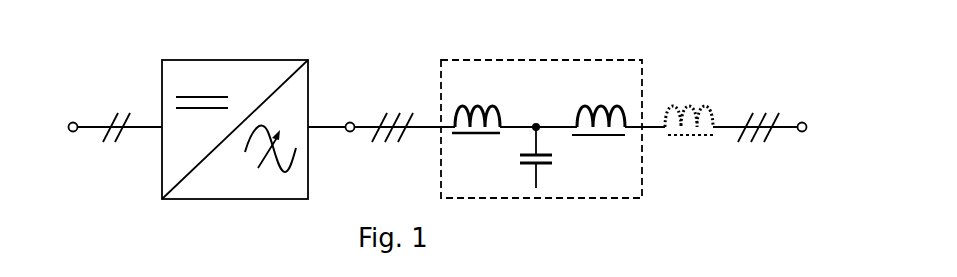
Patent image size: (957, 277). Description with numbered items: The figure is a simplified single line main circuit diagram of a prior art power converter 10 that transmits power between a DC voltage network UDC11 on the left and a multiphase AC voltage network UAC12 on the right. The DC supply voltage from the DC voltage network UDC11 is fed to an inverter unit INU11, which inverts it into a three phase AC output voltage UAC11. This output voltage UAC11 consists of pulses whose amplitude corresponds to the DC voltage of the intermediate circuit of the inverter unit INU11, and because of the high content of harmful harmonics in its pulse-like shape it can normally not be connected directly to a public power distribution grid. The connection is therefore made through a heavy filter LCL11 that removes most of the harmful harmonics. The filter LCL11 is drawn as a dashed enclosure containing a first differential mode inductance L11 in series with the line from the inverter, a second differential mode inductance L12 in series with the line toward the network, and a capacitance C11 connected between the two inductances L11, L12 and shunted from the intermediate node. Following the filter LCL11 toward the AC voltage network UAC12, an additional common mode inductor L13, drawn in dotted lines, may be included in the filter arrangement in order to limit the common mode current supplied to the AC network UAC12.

The power converter 10 is at (804, 33).
The inverter unit INU11 is at (248, 60).
The filter LCL11 is at (555, 60).
The first differential mode inductance L11 is at (476, 107).
The second differential mode inductance L12 is at (598, 108).
The additional common mode inductor L13 is at (689, 108).
The capacitance C11 is at (558, 157).
The DC voltage network UDC11 is at (106, 116).
The output voltage UAC11 is at (381, 116).
The multiphase AC voltage network UAC12 is at (771, 116).